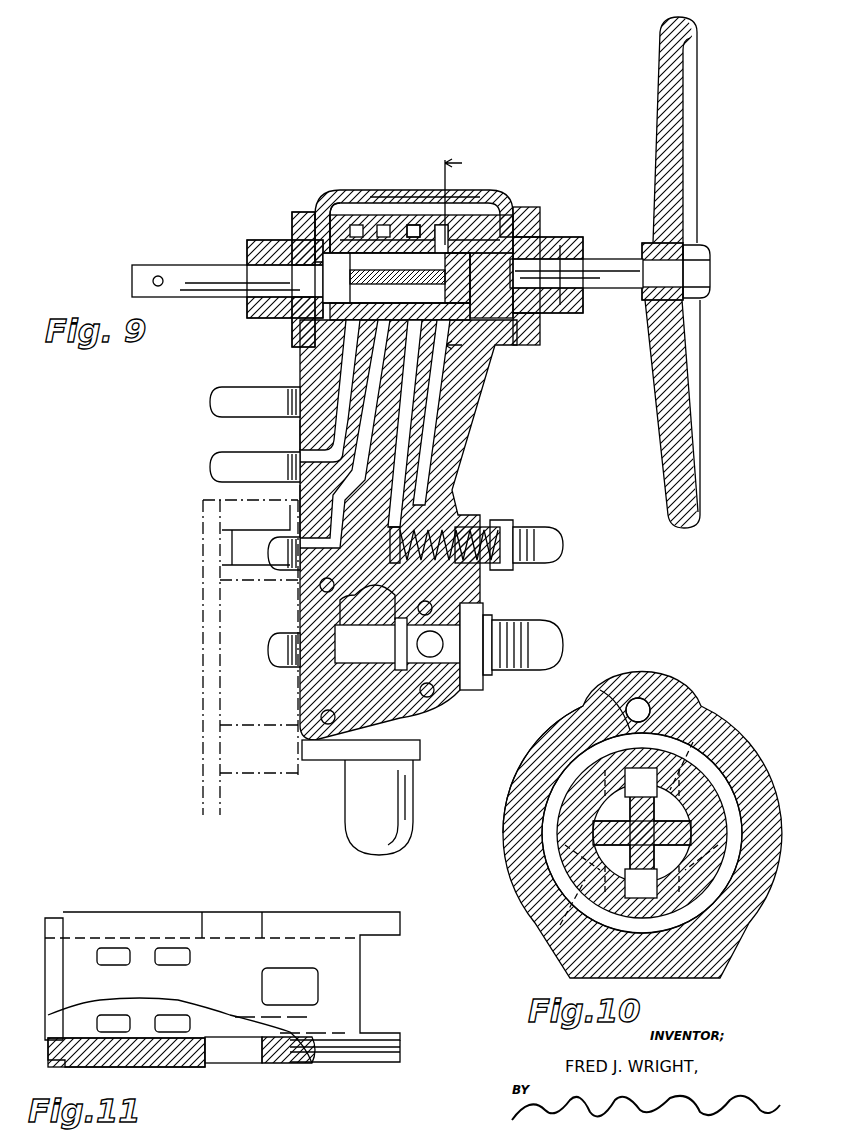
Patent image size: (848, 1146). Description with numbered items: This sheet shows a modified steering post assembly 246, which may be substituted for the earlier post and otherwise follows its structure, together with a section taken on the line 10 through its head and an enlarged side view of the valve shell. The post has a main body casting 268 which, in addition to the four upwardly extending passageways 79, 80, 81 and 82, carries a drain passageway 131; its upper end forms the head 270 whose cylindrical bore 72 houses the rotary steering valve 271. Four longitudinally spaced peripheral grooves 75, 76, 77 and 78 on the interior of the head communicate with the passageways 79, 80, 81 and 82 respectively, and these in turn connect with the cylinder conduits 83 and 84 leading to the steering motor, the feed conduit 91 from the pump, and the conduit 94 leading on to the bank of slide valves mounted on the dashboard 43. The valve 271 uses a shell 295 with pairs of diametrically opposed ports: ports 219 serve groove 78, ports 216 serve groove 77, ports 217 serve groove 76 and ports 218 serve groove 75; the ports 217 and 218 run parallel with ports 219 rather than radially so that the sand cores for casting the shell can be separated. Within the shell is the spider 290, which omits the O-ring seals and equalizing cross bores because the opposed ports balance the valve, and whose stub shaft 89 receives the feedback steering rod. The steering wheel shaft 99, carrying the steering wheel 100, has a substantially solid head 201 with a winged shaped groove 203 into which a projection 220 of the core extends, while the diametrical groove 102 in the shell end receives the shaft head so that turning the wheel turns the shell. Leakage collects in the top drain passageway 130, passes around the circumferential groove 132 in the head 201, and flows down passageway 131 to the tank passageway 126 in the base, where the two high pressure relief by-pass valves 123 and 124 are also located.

In FIG. 9, the section line 10 is at (463, 255).
In FIG. 9, the dashboard 43 is at (208, 643).
In FIG. 9, the cylindrical bore 72 is at (510, 215).
In FIG. 9, the peripheral passageway 75 is at (350, 215).
In FIG. 9, the peripheral passageway 76 is at (383, 225).
In FIG. 9, the peripheral passageway 77 is at (412, 228).
In FIG. 9, the peripheral passageway 78 is at (500, 200).
In FIG. 10, the peripheral passageway 78 is at (722, 795).
In FIG. 9, the upwardly extending passageway 79 is at (330, 400).
In FIG. 9, the upwardly extending passageway 80 is at (298, 490).
In FIG. 9, the upwardly extending passageway 81 is at (398, 380).
In FIG. 9, the upwardly extending passageway 82 is at (410, 425).
In FIG. 9, the cylinder conduit 83 is at (240, 400).
In FIG. 9, the cylinder conduit 84 is at (236, 465).
In FIG. 9, the stub shaft 89 is at (193, 275).
In FIG. 9, the feed conduit 91 is at (287, 562).
In FIG. 9, the conduit 94 is at (290, 662).
In FIG. 9, the steering wheel shaft 99 is at (617, 272).
In FIG. 9, the steering wheel 100 is at (700, 520).
In FIG. 11, the diametrical groove 102 is at (390, 938).
In FIG. 9, the high pressure relief by-pass valve 123 is at (535, 520).
In FIG. 9, the high pressure relief by-pass valve 124 is at (530, 610).
In FIG. 9, the drain passageway 126 is at (440, 680).
In FIG. 9, the drain passageway 130 is at (357, 208).
In FIG. 10, the drain passageway 130 is at (645, 708).
In FIG. 9, the drain passageway 131 is at (435, 460).
In FIG. 9, the circumferential groove 132 is at (545, 320).
In FIG. 9, the solid head 201 is at (530, 250).
In FIG. 9, the winged shaped groove 203 is at (555, 255).
In FIG. 10, the diametrically opposed ports 216 is at (563, 848).
In FIG. 11, the diametrically opposed ports 216 is at (243, 918).
In FIG. 10, the diametrically opposed ports 217 is at (600, 778).
In FIG. 11, the diametrically opposed ports 217 is at (185, 958).
In FIG. 10, the diametrically opposed ports 218 is at (700, 735).
In FIG. 11, the diametrically opposed ports 218 is at (113, 958).
In FIG. 9, the diametrically opposed ports 219 is at (427, 243).
In FIG. 10, the diametrically opposed ports 219 is at (640, 772).
In FIG. 11, the diametrically opposed ports 219 is at (300, 983).
In FIG. 9, the projection 220 is at (585, 270).
In FIG. 9, the steering post assembly 246 is at (490, 445).
In FIG. 9, the main body casting 268 is at (420, 408).
In FIG. 9, the head 270 is at (540, 240).
In FIG. 10, the head 270 is at (575, 740).
In FIG. 9, the rotary steering valve 271 is at (392, 168).
In FIG. 10, the rotary steering valve 271 is at (613, 675).
In FIG. 9, the spider 290 is at (300, 325).
In FIG. 10, the spider 290 is at (540, 890).
In FIG. 9, the shell 295 is at (302, 250).
In FIG. 10, the shell 295 is at (698, 800).
In FIG. 11, the shell 295 is at (155, 922).